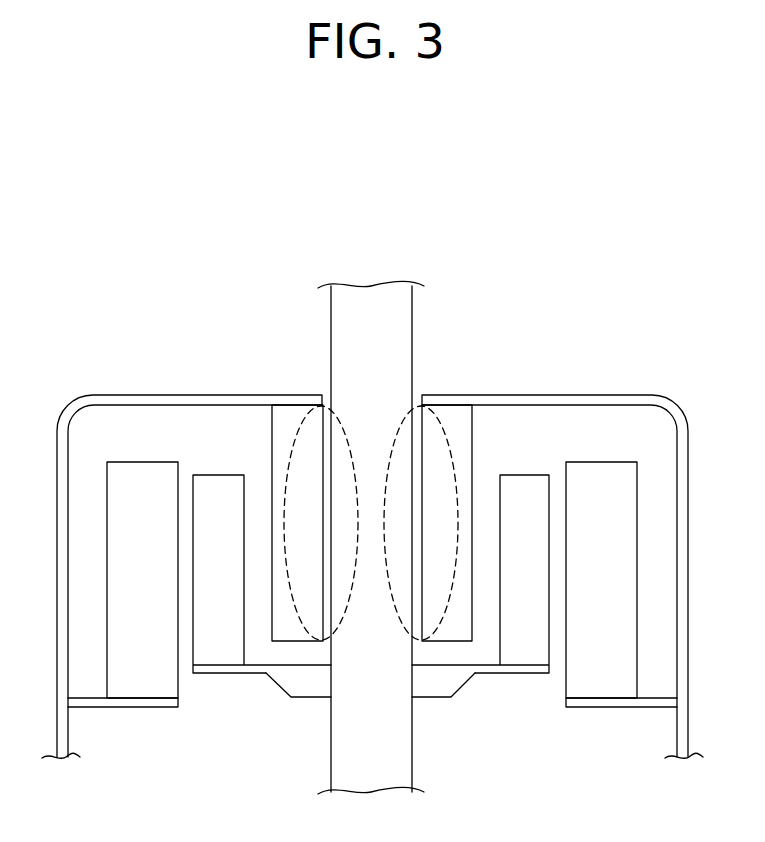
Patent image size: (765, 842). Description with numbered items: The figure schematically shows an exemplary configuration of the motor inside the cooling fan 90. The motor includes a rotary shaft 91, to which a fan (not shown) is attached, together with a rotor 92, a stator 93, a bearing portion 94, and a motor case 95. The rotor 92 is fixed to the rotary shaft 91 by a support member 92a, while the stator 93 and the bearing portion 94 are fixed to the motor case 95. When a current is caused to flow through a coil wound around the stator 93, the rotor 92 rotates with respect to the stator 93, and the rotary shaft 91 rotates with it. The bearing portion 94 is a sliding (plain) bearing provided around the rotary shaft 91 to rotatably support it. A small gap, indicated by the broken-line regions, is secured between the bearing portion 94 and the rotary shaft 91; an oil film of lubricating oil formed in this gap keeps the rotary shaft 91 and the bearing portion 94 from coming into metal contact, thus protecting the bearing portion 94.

The cooling fan 90 is at (388, 185).
The rotary shaft 91 is at (412, 325).
The rotor 92 is at (372, 625).
The support member 92a is at (492, 674).
The stator 93 is at (566, 688).
The bearing portion 94 is at (472, 433).
The motor case 95 is at (627, 395).